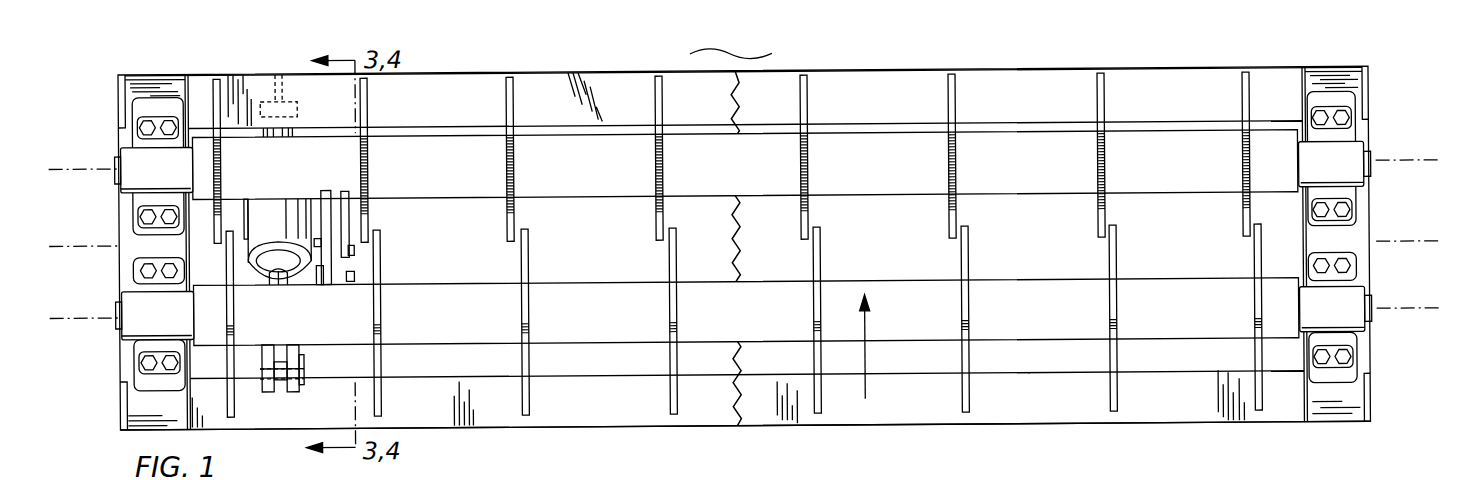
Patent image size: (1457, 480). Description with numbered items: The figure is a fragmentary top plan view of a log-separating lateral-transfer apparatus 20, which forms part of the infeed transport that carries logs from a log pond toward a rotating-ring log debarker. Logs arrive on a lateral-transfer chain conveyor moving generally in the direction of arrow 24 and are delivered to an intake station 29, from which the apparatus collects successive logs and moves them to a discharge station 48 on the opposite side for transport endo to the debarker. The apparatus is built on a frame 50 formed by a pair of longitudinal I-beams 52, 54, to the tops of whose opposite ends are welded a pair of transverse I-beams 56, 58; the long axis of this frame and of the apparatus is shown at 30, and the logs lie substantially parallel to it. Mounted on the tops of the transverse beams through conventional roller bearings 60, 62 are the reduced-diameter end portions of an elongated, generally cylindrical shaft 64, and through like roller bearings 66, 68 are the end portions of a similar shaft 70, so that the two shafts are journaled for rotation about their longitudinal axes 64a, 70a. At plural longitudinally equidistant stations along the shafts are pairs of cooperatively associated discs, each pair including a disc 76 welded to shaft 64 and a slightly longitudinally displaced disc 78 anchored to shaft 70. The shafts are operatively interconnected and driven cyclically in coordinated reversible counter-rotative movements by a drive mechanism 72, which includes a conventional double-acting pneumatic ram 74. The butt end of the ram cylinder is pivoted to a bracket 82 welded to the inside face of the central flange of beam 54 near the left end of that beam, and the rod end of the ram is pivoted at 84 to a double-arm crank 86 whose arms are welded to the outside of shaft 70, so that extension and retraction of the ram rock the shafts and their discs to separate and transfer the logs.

The log-separating lateral-transfer apparatus 20 is at (822, 432).
The arrow 24 is at (866, 355).
The intake station 29 is at (1328, 444).
The longitudinal axis 30 is at (1405, 250).
The discharge station 48 is at (1324, 56).
The frame 50 is at (1026, 364).
The longitudinal I-beam 52 is at (747, 394).
The longitudinal I-beam 54 is at (743, 89).
The transverse I-beam 56 is at (158, 244).
The transverse I-beam 58 is at (1332, 236).
The roller bearing 60 is at (153, 163).
The roller bearing 62 is at (1335, 171).
The shaft 64 is at (745, 152).
The longitudinal axis of shaft 64 64a is at (1410, 169).
The roller bearing 66 is at (147, 321).
The roller bearing 68 is at (1335, 323).
The shaft 70 is at (1209, 278).
The longitudinal axis of shaft 70 70a is at (1408, 316).
The drive mechanism 72 is at (313, 158).
The double-acting pneumatic ram 74 is at (280, 218).
The disc 76 is at (1236, 105).
The disc 78 is at (1268, 256).
The bracket 82 is at (268, 101).
The pivot 84 is at (303, 371).
The double-arm crank 86 is at (310, 356).